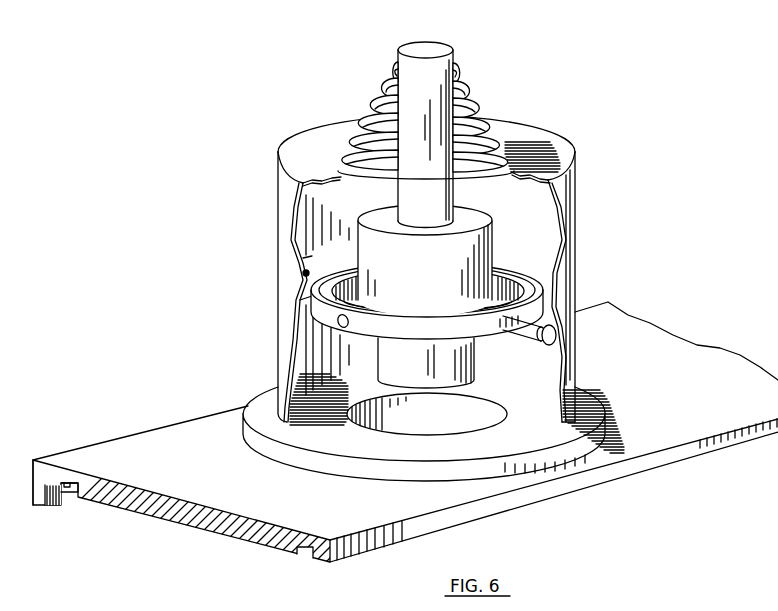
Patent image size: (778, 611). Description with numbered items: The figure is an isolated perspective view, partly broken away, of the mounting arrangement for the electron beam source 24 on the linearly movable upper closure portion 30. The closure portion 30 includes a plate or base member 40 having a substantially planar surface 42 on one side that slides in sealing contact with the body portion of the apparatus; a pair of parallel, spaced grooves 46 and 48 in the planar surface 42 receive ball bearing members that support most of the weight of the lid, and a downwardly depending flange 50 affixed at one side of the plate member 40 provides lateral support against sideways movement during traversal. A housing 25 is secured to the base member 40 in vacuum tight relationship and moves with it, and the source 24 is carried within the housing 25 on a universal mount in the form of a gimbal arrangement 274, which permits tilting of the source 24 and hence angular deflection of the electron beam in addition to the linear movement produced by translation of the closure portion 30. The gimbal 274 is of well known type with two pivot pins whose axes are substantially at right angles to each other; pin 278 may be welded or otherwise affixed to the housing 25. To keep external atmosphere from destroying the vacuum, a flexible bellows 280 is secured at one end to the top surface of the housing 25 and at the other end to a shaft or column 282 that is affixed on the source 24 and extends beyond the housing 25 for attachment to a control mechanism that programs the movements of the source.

The electron beam source 24 is at (433, 290).
The housing 25 is at (562, 248).
The upper closure portion 30 is at (631, 342).
The plate or base member 40 is at (722, 452).
The substantially planar surface 42 is at (232, 538).
The groove 46 is at (70, 492).
The groove 48 is at (303, 559).
The downwardly depending flange 50 is at (43, 507).
The gimbal arrangement 274 is at (503, 277).
The pivot pin 278 is at (533, 341).
The flexible bellows 280 is at (470, 103).
The shaft or column 282 is at (410, 63).